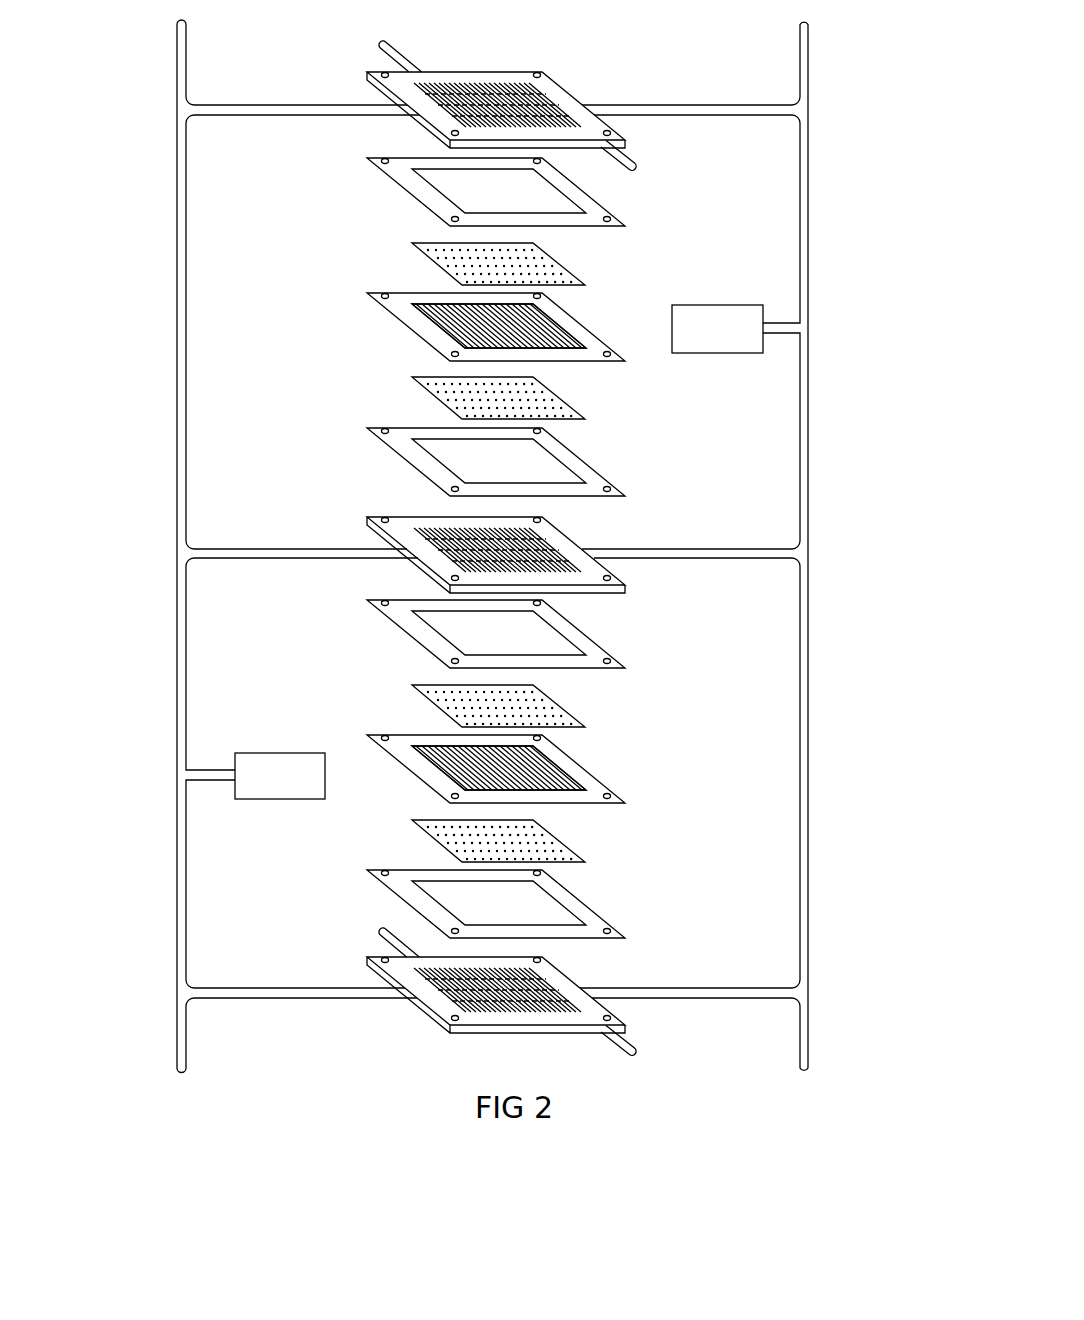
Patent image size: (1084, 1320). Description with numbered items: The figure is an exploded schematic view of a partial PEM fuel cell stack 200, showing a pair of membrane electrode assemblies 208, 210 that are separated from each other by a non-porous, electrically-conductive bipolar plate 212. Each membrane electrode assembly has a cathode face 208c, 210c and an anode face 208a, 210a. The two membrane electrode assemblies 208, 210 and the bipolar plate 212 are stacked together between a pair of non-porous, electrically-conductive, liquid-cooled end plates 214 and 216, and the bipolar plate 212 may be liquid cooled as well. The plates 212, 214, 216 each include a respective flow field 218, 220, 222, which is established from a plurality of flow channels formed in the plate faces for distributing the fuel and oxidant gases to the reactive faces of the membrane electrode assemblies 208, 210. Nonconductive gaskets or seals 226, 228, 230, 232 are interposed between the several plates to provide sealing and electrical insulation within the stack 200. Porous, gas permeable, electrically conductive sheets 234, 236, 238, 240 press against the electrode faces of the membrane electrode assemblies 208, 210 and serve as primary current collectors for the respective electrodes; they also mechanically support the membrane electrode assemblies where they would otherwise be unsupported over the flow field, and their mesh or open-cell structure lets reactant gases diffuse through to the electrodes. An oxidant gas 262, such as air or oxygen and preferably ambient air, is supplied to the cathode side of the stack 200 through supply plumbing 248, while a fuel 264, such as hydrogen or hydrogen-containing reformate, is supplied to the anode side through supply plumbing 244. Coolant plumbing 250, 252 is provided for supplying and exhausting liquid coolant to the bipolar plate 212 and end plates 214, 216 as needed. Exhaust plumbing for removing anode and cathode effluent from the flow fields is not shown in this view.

The partial PEM fuel cell stack 200 is at (824, 806).
The membrane electrode assembly 208 is at (462, 329).
The anode face 208a is at (555, 345).
The cathode face 208c is at (550, 322).
The membrane electrode assembly 210 is at (537, 743).
The anode face 210a is at (437, 785).
The cathode face 210c is at (430, 745).
The bipolar plate 212 is at (435, 533).
The end plate 214 is at (420, 113).
The end plate 216 is at (522, 1008).
The flow field 218 is at (420, 122).
The flow field 220 is at (543, 536).
The flow field 222 is at (445, 1000).
The gasket 226 is at (425, 198).
The gasket 228 is at (400, 443).
The gasket 230 is at (598, 650).
The gasket 232 is at (580, 903).
The primary current collector sheet 234 is at (430, 253).
The primary current collector sheet 236 is at (440, 393).
The primary current collector sheet 238 is at (550, 708).
The primary current collector sheet 240 is at (560, 843).
The supply plumbing 244 is at (178, 880).
The supply plumbing 248 is at (810, 447).
The coolant plumbing 250 is at (398, 48).
The coolant plumbing 252 is at (628, 157).
The oxidant gas 262 is at (695, 303).
The fuel 264 is at (290, 753).